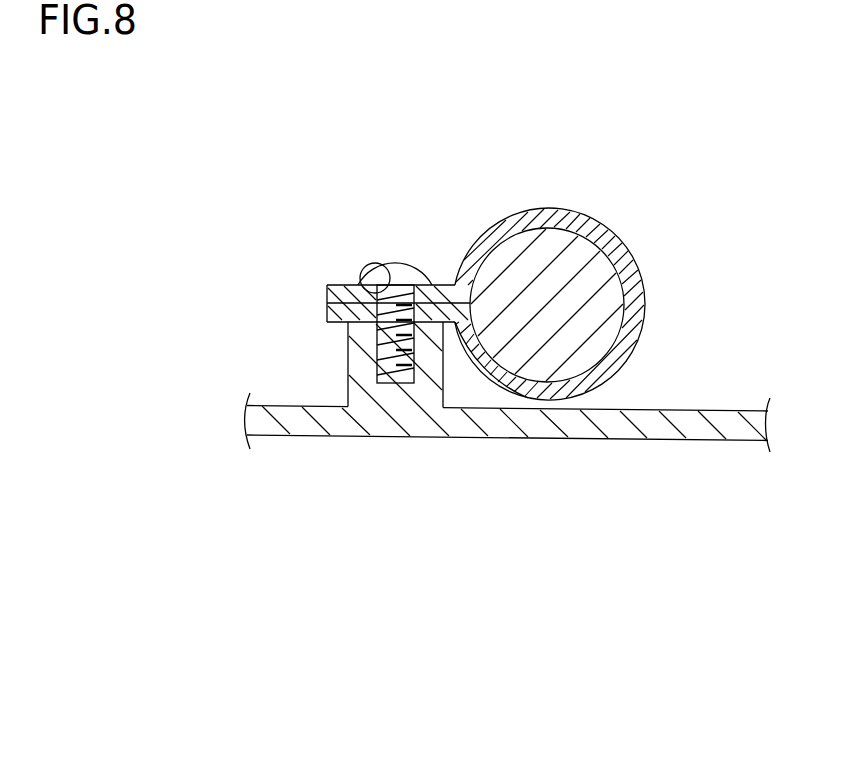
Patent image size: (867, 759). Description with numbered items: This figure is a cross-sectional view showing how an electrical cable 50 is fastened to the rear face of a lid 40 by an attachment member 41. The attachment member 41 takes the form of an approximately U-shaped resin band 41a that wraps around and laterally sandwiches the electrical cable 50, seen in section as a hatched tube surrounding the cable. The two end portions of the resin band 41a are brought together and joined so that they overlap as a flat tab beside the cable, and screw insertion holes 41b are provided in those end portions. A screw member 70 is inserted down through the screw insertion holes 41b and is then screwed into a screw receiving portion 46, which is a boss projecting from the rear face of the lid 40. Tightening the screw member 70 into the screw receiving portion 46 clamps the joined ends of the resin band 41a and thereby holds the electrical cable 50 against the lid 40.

The lid 40 is at (702, 441).
The attachment member 41 is at (503, 218).
The resin band 41a is at (568, 216).
The screw insertion holes 41b is at (387, 265).
The screw receiving portion 46 is at (348, 350).
The electrical cable 50 is at (602, 268).
The screw member 70 is at (405, 265).